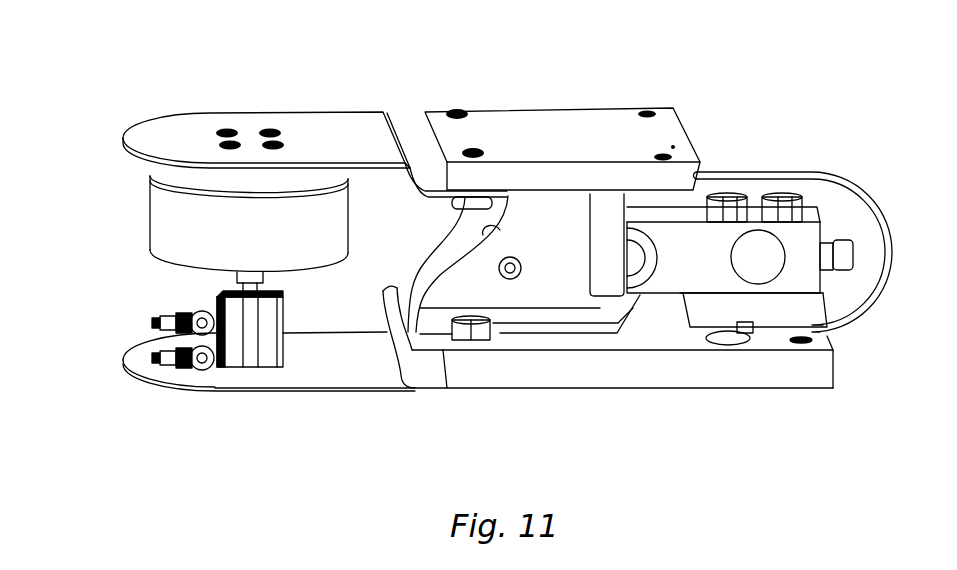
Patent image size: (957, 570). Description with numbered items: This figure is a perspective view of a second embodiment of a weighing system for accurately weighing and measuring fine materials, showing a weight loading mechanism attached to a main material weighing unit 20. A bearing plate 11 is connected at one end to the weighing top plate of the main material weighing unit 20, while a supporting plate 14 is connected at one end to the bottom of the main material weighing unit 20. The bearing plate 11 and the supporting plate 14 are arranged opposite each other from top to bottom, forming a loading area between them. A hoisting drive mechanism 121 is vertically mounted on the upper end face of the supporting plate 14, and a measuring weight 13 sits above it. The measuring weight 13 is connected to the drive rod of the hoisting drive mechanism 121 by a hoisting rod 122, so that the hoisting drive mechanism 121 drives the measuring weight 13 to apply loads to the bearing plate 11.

The bearing plate 11 is at (313, 128).
The main material weighing unit 20 is at (568, 112).
The measuring weight 13 is at (172, 223).
The hoisting rod 122 is at (233, 283).
The hoisting drive mechanism 121 is at (248, 340).
The supporting plate 14 is at (343, 363).